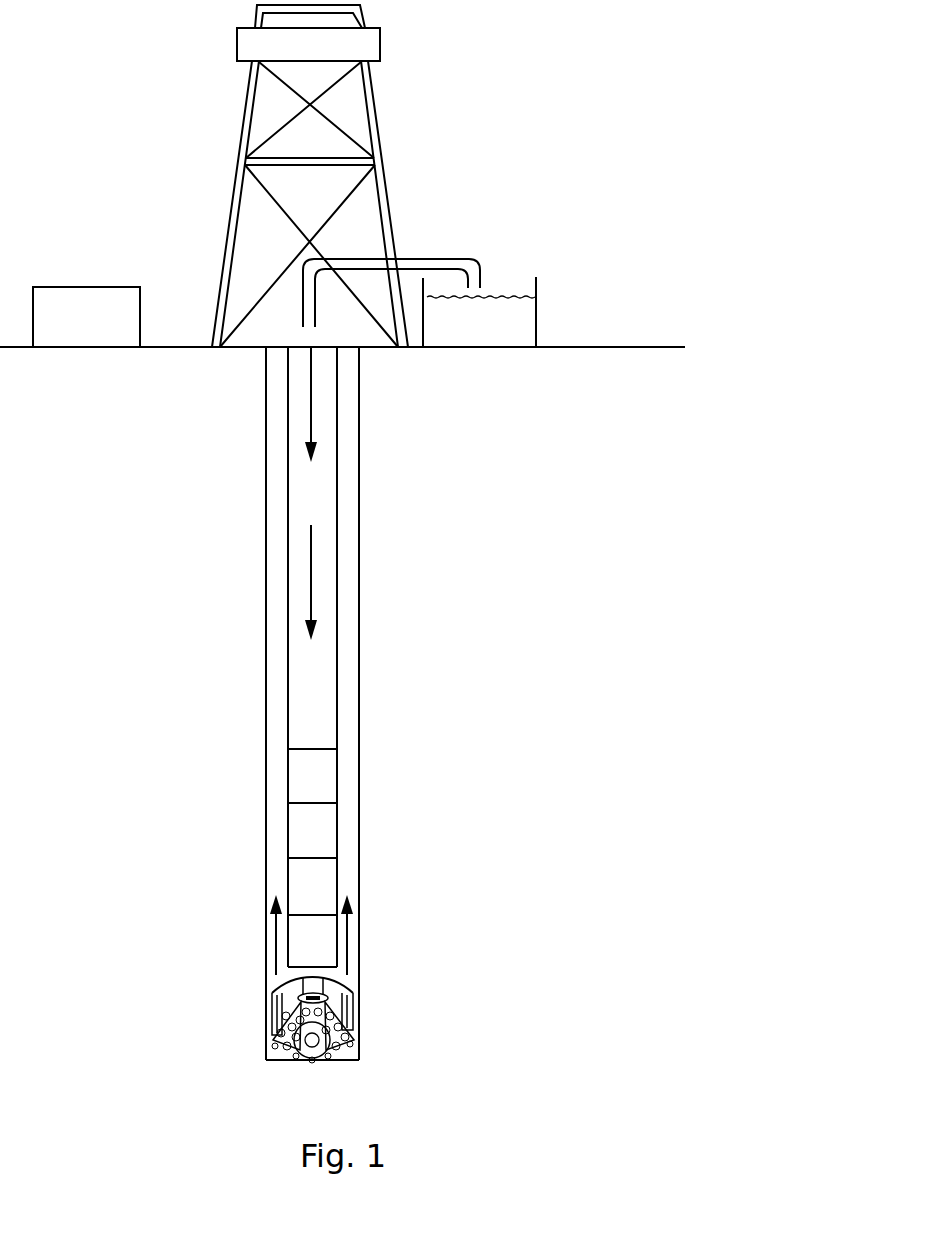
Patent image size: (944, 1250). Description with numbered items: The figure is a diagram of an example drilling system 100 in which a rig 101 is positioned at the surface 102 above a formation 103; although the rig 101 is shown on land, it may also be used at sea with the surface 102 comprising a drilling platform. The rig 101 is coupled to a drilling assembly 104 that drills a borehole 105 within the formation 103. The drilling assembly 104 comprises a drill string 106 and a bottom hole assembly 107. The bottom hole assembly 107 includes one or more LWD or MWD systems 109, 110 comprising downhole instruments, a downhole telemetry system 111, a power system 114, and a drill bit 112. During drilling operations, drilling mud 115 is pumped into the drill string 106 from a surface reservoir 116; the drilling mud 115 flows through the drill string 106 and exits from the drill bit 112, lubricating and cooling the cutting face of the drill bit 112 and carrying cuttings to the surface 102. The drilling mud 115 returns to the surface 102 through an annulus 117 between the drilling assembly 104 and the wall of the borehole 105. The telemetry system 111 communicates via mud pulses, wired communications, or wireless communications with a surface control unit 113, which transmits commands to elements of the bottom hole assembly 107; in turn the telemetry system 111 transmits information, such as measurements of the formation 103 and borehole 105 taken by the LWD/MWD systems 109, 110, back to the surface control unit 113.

The drilling system 100 is at (537, 92).
The rig 101 is at (378, 125).
The surface 102 is at (578, 347).
The formation 103 is at (562, 462).
The drilling assembly 104 is at (278, 540).
The borehole 105 is at (359, 450).
The drill string 106 is at (337, 553).
The bottom hole assembly 107 is at (350, 856).
The LWD/MWD system 109 is at (288, 945).
The LWD/MWD system 110 is at (288, 887).
The downhole telemetry system 111 is at (288, 840).
The drill bit 112 is at (345, 988).
The surface control unit 113 is at (86, 317).
The power system 114 is at (288, 778).
The drilling mud 115 is at (310, 422).
The surface reservoir 116 is at (536, 290).
The annulus 117 is at (350, 767).